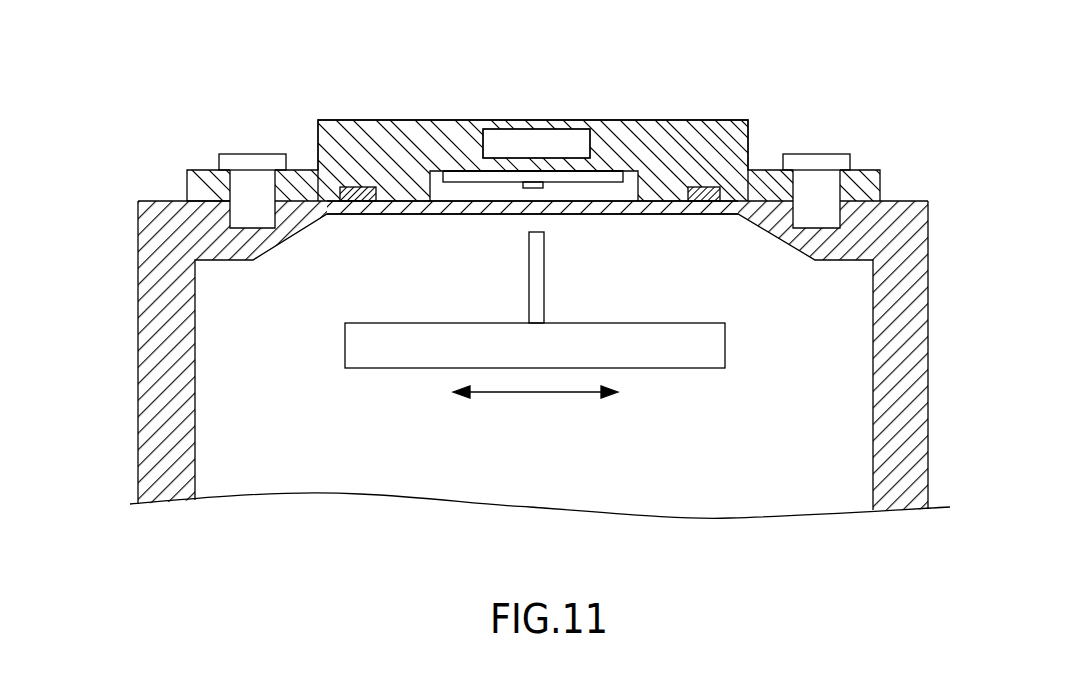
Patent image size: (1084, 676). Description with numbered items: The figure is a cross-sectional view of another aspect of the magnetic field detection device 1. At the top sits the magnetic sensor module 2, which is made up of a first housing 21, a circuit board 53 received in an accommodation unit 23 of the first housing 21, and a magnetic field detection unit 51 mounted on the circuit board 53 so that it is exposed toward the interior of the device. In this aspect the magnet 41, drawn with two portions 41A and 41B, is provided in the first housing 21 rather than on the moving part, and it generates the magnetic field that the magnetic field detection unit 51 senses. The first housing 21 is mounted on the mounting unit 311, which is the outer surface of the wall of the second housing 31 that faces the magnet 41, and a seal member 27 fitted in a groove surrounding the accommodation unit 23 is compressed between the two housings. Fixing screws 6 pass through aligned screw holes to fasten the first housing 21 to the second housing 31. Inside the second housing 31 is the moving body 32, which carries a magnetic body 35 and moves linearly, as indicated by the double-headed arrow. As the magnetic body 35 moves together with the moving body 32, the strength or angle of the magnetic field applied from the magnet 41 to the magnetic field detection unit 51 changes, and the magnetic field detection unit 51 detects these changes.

The magnetic field detection device 1 is at (806, 91).
The magnetic sensor module 2 is at (380, 118).
The first housing 21 is at (683, 143).
The accommodation unit 23 is at (621, 192).
The seal member 27 is at (345, 190).
The second housing 31 is at (160, 358).
The mounting unit 311 is at (480, 213).
The moving body 32 is at (695, 358).
The magnetic body 35 is at (545, 281).
The magnet 41 is at (555, 142).
The first layer 41A is at (470, 168).
The second layer 41B is at (519, 130).
The magnetic field detection unit 51 is at (522, 190).
The circuit board 53 is at (613, 166).
The fixing screw 6 is at (248, 168).